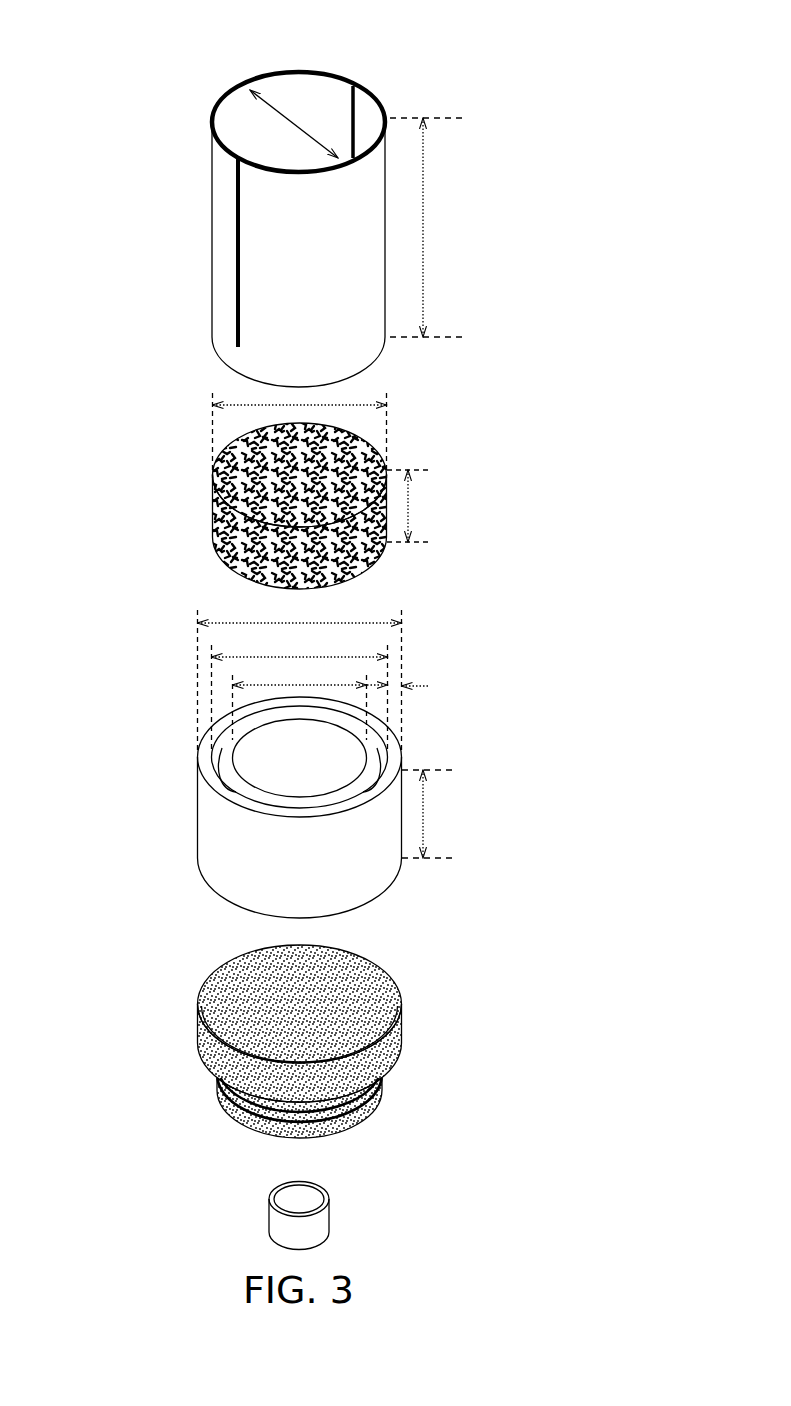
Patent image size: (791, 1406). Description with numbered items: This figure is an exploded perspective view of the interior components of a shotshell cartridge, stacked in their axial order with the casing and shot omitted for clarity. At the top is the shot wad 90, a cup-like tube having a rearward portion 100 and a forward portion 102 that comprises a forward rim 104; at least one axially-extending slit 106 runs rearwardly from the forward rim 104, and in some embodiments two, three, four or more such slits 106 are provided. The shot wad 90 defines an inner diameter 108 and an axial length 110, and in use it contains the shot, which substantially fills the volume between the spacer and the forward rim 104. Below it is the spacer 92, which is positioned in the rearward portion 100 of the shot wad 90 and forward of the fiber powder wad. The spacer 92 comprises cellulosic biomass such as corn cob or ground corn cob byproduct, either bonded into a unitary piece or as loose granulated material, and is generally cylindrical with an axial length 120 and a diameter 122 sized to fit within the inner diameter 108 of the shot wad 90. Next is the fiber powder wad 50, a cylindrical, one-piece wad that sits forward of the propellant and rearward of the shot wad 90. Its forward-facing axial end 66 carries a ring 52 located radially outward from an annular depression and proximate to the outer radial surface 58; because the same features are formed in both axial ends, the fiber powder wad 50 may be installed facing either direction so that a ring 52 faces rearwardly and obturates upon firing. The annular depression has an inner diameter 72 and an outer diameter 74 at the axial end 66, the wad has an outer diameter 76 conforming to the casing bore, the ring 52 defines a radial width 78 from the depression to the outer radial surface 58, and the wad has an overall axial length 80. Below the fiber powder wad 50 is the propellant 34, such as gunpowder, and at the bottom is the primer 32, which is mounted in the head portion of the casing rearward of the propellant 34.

The primer 32 is at (268, 1220).
The propellant 34 is at (198, 1030).
The fiber powder wad 50 is at (309, 744).
The ring 52 is at (205, 752).
The outer radial surface 58 is at (208, 848).
The forward-facing axial end 66 is at (345, 748).
The inner diameter 72 is at (305, 683).
The outer diameter 74 is at (300, 655).
The outer diameter 76 is at (375, 623).
The width 78 is at (418, 686).
The axial length 80 is at (423, 820).
The shot wad 90 is at (285, 195).
The spacer 92 is at (316, 474).
The rearward portion 100 is at (285, 195).
The forward portion 102 is at (205, 182).
The forward rim 104 is at (223, 100).
The axially-extending slit 106 is at (353, 117).
The inner diameter 108 is at (267, 100).
The axial length 110 is at (423, 231).
The axial length 120 is at (408, 507).
The diameter 122 is at (353, 405).